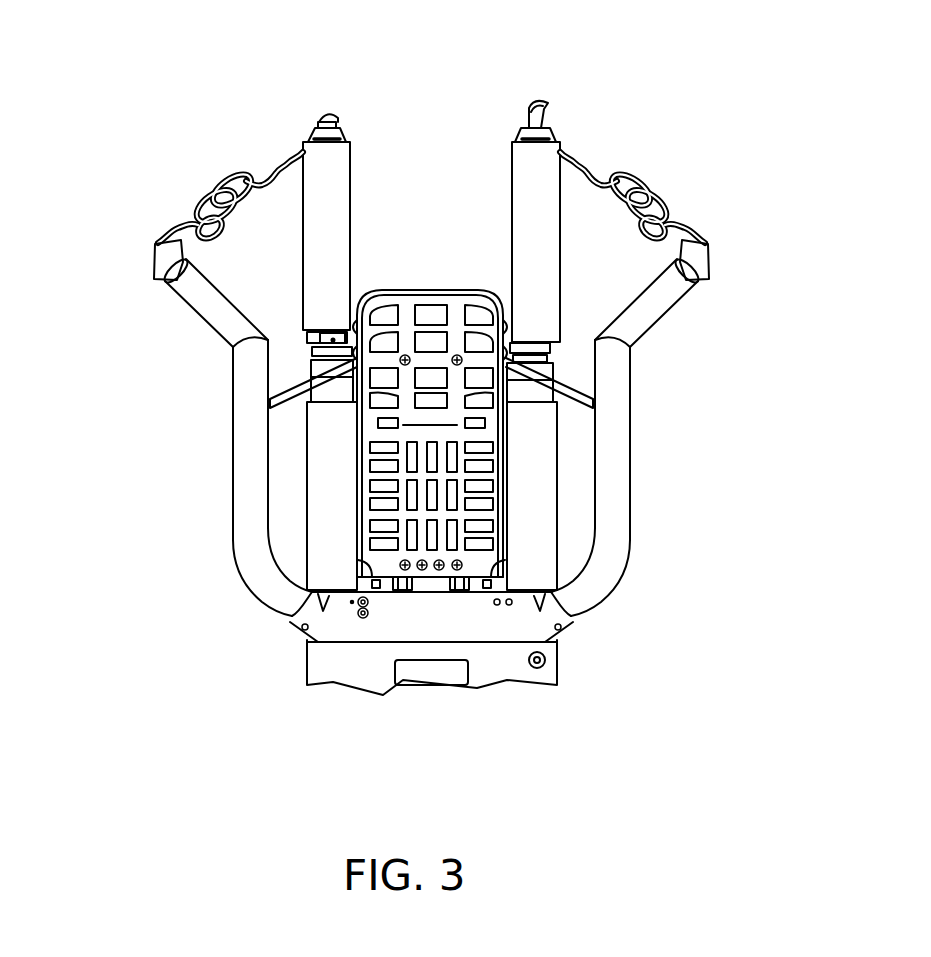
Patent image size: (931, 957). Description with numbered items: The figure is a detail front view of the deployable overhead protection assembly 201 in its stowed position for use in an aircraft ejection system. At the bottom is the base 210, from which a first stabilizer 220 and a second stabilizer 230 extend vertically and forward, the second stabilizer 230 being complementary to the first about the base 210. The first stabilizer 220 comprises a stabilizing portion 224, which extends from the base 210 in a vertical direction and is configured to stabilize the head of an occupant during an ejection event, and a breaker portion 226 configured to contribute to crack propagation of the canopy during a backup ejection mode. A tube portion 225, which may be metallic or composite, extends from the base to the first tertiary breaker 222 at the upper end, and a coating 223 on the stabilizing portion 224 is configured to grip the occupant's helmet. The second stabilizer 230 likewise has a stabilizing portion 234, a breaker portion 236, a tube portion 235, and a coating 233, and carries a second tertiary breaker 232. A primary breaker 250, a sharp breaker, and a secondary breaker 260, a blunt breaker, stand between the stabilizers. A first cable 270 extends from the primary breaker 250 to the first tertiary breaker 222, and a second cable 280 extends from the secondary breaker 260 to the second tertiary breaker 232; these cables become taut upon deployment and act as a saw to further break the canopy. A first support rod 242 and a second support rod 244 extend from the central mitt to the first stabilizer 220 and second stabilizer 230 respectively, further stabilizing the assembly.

The deployable overhead protection assembly 201 is at (672, 54).
The base 210 is at (490, 622).
The first stabilizer 220 is at (666, 428).
The first tertiary breaker 222 is at (690, 263).
The coating 223 is at (580, 588).
The stabilizing portion 224 is at (610, 560).
The tube portion 225 is at (635, 318).
The breaker portion 226 is at (652, 298).
The second stabilizer 230 is at (202, 428).
The second tertiary breaker 232 is at (165, 257).
The left handle lower end 233 is at (287, 607).
The stabilizing portion 234 is at (247, 543).
The tube portion 235 is at (180, 287).
The breaker portion 236 is at (227, 322).
The first support rod 242 is at (558, 363).
The second support rod 244 is at (302, 385).
The primary breaker 250 is at (530, 122).
The secondary breaker 260 is at (333, 123).
The first cable 270 is at (628, 180).
The second cable 280 is at (213, 188).